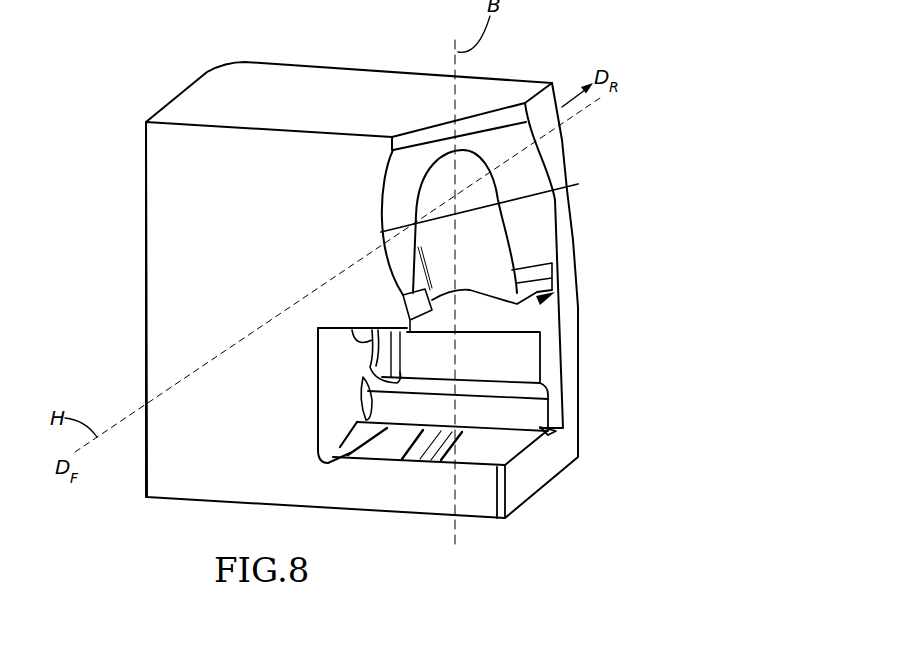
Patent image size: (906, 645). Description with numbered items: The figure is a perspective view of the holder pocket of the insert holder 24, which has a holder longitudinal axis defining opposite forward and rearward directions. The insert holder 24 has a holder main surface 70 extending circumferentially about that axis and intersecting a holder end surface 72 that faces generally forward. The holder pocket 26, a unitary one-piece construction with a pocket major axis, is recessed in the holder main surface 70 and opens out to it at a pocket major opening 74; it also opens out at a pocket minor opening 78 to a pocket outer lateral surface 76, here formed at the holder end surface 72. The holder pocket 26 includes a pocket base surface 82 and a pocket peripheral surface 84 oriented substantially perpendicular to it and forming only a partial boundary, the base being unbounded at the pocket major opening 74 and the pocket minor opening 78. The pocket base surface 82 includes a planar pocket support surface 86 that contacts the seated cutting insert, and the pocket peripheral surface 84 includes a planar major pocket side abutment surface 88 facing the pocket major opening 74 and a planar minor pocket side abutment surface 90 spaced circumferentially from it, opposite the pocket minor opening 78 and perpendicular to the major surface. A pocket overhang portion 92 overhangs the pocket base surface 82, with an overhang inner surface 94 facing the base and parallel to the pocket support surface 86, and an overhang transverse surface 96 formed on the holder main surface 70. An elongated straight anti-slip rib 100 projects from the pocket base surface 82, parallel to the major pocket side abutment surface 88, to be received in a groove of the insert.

The insert holder 24 is at (566, 64).
The holder pocket 26 is at (542, 314).
The holder main surface 70 is at (550, 460).
The holder end surface 72 is at (137, 309).
The pocket major opening 74 is at (519, 354).
The pocket outer lateral surface 76 is at (248, 265).
The pocket minor opening 78 is at (376, 456).
The pocket base surface 82 is at (510, 449).
The pocket peripheral surface 84 is at (556, 362).
The pocket support surface 86 is at (467, 455).
The major pocket side abutment surface 88 is at (355, 372).
The minor pocket side abutment surface 90 is at (500, 372).
The pocket overhang portion 92 is at (530, 220).
The overhang inner surface 94 is at (363, 377).
The overhang transverse surface 96 is at (525, 185).
The anti-slip rib 100 is at (424, 423).